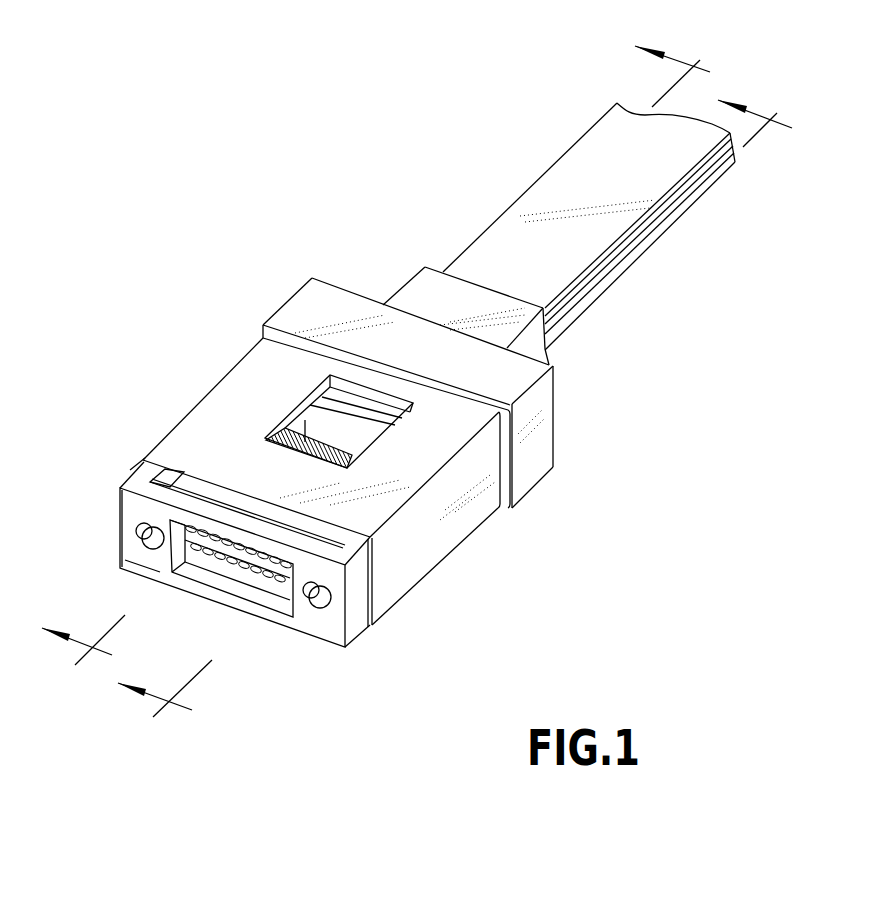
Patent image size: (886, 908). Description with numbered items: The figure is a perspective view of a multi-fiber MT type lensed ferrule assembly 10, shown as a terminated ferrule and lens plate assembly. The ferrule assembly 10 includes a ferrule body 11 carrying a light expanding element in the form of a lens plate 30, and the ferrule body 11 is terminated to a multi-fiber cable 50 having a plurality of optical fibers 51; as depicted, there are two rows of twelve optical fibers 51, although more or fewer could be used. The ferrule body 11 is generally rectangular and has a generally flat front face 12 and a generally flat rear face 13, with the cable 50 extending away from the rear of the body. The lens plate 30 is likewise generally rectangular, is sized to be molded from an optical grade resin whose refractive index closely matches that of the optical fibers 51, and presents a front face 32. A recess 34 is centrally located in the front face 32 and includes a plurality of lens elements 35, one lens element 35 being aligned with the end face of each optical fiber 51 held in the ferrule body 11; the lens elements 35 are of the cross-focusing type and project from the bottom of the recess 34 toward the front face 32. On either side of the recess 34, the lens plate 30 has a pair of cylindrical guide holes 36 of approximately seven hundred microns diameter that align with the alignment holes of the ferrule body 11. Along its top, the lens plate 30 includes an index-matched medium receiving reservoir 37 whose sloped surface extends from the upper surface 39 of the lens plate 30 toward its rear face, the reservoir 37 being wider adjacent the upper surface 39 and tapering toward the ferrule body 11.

The ferrule assembly 10 is at (272, 248).
The ferrule body 11 is at (462, 513).
The front face 12 is at (203, 486).
The rear face 13 is at (557, 405).
The lens plate 30 is at (128, 560).
The front face 32 is at (152, 568).
The recess 34 is at (268, 592).
The lens elements 35 is at (197, 552).
The guide holes 36 is at (142, 527).
The index-matched medium receiving reservoir 37 is at (176, 470).
The upper surface 39 is at (140, 466).
The multi-fiber cable 50 is at (687, 202).
The optical fibers 51 is at (288, 425).